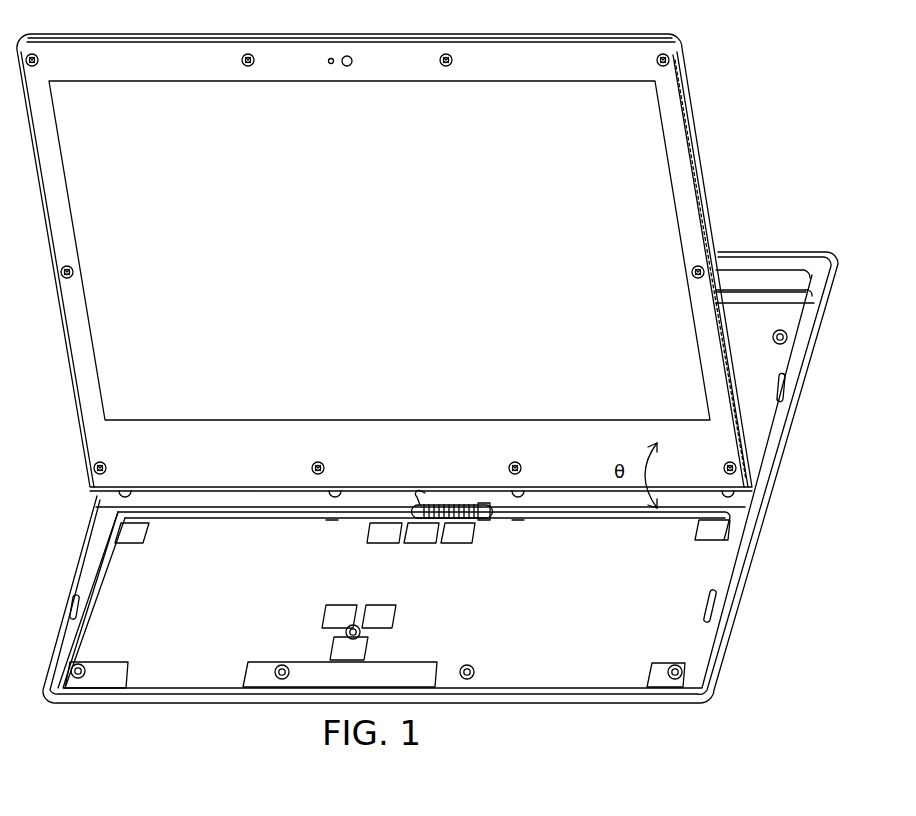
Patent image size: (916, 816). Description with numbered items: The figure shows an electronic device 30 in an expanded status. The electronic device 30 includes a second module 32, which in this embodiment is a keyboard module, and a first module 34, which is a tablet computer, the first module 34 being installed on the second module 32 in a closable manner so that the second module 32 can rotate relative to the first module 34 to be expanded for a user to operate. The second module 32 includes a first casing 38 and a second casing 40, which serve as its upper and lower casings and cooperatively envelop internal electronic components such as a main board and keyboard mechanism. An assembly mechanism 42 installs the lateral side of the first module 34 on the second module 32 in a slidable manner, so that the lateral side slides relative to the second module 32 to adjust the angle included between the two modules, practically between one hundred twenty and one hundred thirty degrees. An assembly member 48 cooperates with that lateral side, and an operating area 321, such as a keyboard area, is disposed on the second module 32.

The electronic device 30 is at (463, 388).
The second module 32 is at (476, 497).
The first module 34 is at (716, 160).
The first casing 38 is at (704, 701).
The second casing 40 is at (717, 665).
The assembly mechanism 42 is at (400, 503).
The assembly member 48 is at (425, 500).
The operating area 321 is at (340, 653).